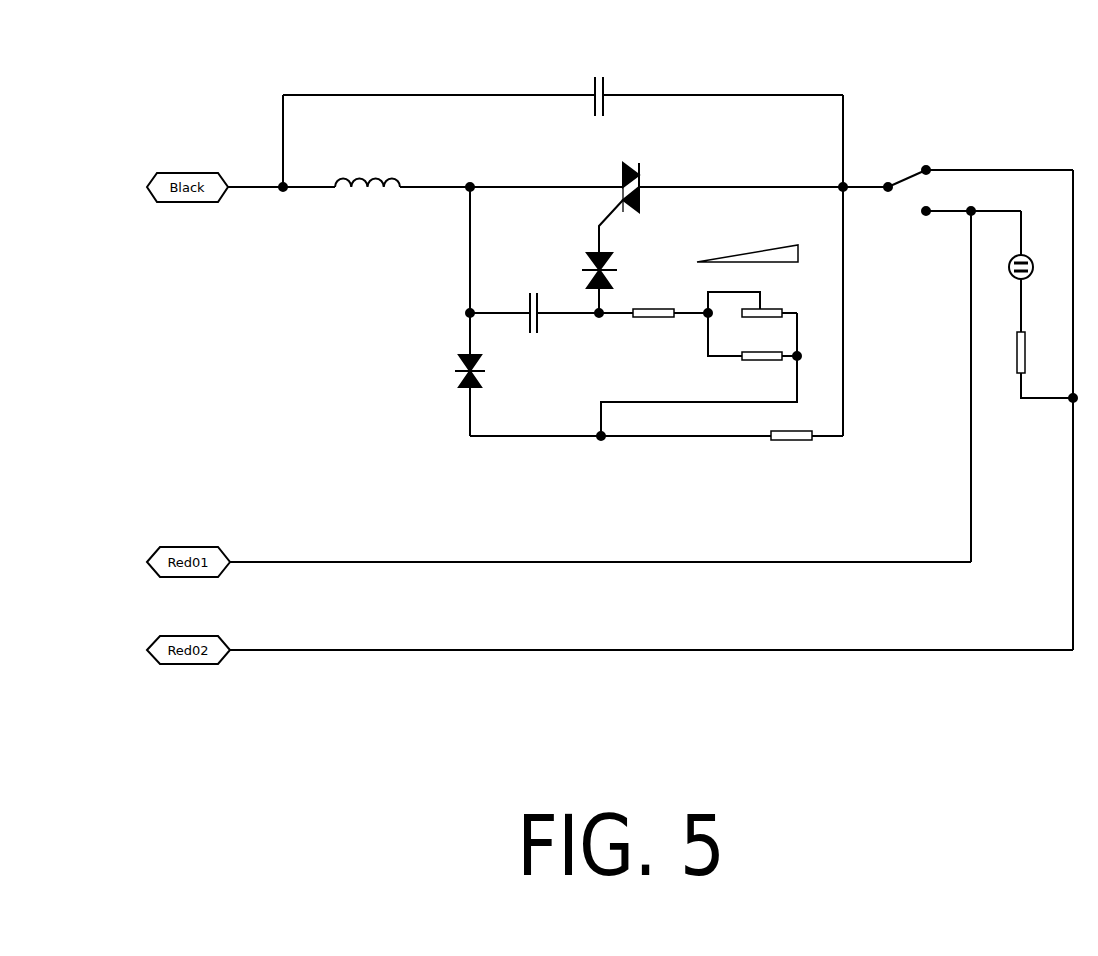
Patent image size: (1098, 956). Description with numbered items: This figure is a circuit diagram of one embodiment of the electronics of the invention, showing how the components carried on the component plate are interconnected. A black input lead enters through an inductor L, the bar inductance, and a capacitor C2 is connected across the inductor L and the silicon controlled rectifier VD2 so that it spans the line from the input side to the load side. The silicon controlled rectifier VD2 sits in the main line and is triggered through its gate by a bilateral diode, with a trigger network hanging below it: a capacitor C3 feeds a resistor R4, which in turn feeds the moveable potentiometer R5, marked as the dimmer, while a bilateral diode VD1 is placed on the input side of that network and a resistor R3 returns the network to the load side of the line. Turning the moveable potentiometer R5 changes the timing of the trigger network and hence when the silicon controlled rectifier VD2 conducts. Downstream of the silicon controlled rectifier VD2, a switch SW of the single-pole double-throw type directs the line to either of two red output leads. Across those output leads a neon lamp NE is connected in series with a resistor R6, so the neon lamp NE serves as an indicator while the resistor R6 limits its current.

The capacitor C2 is at (563, 76).
The inductor L is at (402, 171).
The silicon controlled rectifier VD2 is at (626, 232).
The capacitor C3 is at (512, 295).
The bilateral diode VD1 is at (485, 368).
The resistor R4 is at (652, 296).
The moveable potentiometer R5 is at (749, 321).
The resistor R3 is at (796, 451).
The switch SW is at (978, 177).
The neon lamp NE is at (1030, 264).
The resistor R6 is at (1002, 350).